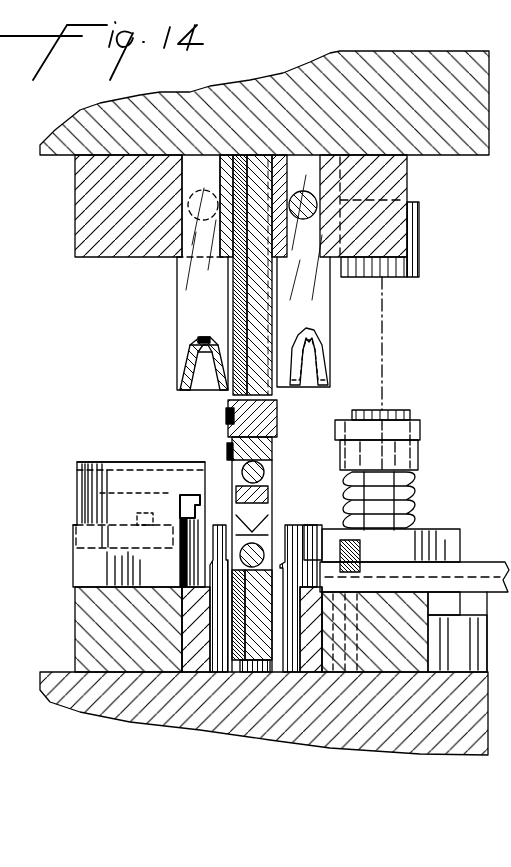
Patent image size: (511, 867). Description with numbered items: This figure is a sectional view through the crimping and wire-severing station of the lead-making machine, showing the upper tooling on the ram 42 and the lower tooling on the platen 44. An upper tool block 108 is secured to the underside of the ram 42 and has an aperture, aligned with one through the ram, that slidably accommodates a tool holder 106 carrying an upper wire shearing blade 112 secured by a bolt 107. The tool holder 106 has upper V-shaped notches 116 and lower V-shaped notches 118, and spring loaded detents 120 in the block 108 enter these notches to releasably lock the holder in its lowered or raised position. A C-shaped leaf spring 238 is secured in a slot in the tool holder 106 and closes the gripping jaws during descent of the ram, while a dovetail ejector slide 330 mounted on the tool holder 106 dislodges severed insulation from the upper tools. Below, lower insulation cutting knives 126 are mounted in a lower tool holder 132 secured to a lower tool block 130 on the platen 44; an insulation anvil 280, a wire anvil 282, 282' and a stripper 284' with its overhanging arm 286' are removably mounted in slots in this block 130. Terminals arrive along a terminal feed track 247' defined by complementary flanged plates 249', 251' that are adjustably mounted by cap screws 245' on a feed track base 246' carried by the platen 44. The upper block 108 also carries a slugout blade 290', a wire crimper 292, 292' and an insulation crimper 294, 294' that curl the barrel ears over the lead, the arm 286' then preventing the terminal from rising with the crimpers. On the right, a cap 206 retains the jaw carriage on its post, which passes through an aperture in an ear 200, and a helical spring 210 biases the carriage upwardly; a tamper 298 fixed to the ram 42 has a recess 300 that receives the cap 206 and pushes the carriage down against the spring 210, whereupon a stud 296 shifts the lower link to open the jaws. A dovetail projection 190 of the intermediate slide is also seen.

The ram 42 is at (105, 134).
The platen 44 is at (228, 725).
The tool holder 106 is at (227, 414).
The bolt 107 is at (266, 474).
The upper tool block 108 is at (95, 212).
The upper wire shearing blade 112 is at (268, 494).
The upper V-shaped notches 116 is at (272, 238).
The lower V-shaped notches 118 is at (268, 340).
The spring loaded detents 120 is at (208, 192).
The lower insulation cutting knives 126 is at (266, 524).
The lower tool block 130 is at (95, 638).
The lower tool holder 132 is at (245, 675).
The dovetail projection 190 is at (457, 632).
The ear 200 is at (460, 545).
The cap 206 is at (388, 412).
The helical spring 210 is at (408, 500).
The C-shaped leaf spring 238 is at (285, 410).
The cap screws 245' is at (126, 508).
The feed track base 246' is at (113, 524).
The terminal feed track 247' is at (141, 454).
The flanged plate 249' is at (135, 481).
The flanged plate 251' is at (51, 525).
The insulation anvil 280 is at (306, 543).
The wire anvil 282 is at (330, 535).
The wire anvil 282' is at (124, 536).
The stripper 284' is at (120, 491).
The overhanging arm 286' is at (175, 527).
The slugout blade 290' is at (180, 336).
The wire crimper 292 is at (323, 322).
The wire crimper 292' is at (172, 332).
The insulation crimper 294 is at (330, 350).
The insulation crimper 294' is at (169, 355).
The stud 296 is at (378, 546).
The tamper 298 is at (470, 248).
The recess 300 is at (390, 276).
The dovetail ejector slide 330 is at (228, 452).